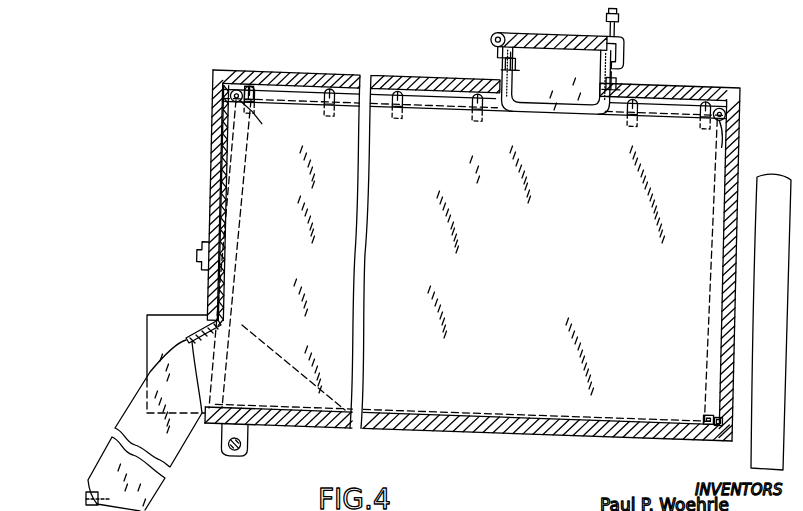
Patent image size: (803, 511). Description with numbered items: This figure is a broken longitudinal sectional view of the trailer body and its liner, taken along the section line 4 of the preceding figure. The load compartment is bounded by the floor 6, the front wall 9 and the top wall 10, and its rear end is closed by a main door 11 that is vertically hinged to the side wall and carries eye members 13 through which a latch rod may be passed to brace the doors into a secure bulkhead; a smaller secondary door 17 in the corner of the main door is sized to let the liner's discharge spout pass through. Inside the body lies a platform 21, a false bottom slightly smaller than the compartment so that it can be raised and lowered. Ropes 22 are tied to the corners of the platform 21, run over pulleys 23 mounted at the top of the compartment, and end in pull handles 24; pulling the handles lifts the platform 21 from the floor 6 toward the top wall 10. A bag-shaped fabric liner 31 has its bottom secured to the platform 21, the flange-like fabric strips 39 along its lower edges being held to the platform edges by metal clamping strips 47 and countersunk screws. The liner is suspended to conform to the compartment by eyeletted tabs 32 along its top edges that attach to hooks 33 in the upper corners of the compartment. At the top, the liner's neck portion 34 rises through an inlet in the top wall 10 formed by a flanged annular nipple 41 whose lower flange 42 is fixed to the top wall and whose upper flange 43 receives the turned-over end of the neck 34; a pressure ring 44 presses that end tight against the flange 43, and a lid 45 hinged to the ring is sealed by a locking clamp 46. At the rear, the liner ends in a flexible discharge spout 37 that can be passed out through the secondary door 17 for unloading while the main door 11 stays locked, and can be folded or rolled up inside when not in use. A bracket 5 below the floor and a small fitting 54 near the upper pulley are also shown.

The section line 4 is at (462, 13).
The mounting bracket 5 is at (236, 452).
The floor 6 is at (425, 440).
The front wall 9 is at (740, 160).
The top wall 10 is at (443, 80).
The main double-wing door 11 is at (212, 192).
The eye member 13 is at (205, 262).
The secondary door 17 is at (175, 300).
The platform 21 is at (306, 426).
The rope 22 is at (447, 100).
The pulley 23 is at (237, 88).
The pull handle 24 is at (222, 160).
The liner 31 is at (305, 100).
The tab 32 is at (486, 112).
The hook 33 is at (330, 90).
The neck portion 34 is at (522, 88).
The discharge spout 37 is at (135, 412).
The flange-like fabric strip 39 is at (705, 428).
The flanged annular nipple 41 is at (505, 66).
The lower flange 42 is at (608, 85).
The upper flange 43 is at (492, 44).
The pressure ring 44 is at (620, 52).
The lid 45 is at (545, 33).
The locking clamp 46 is at (616, 28).
The metal clamping strip 47 is at (730, 436).
The pivot bracket 54 is at (251, 98).